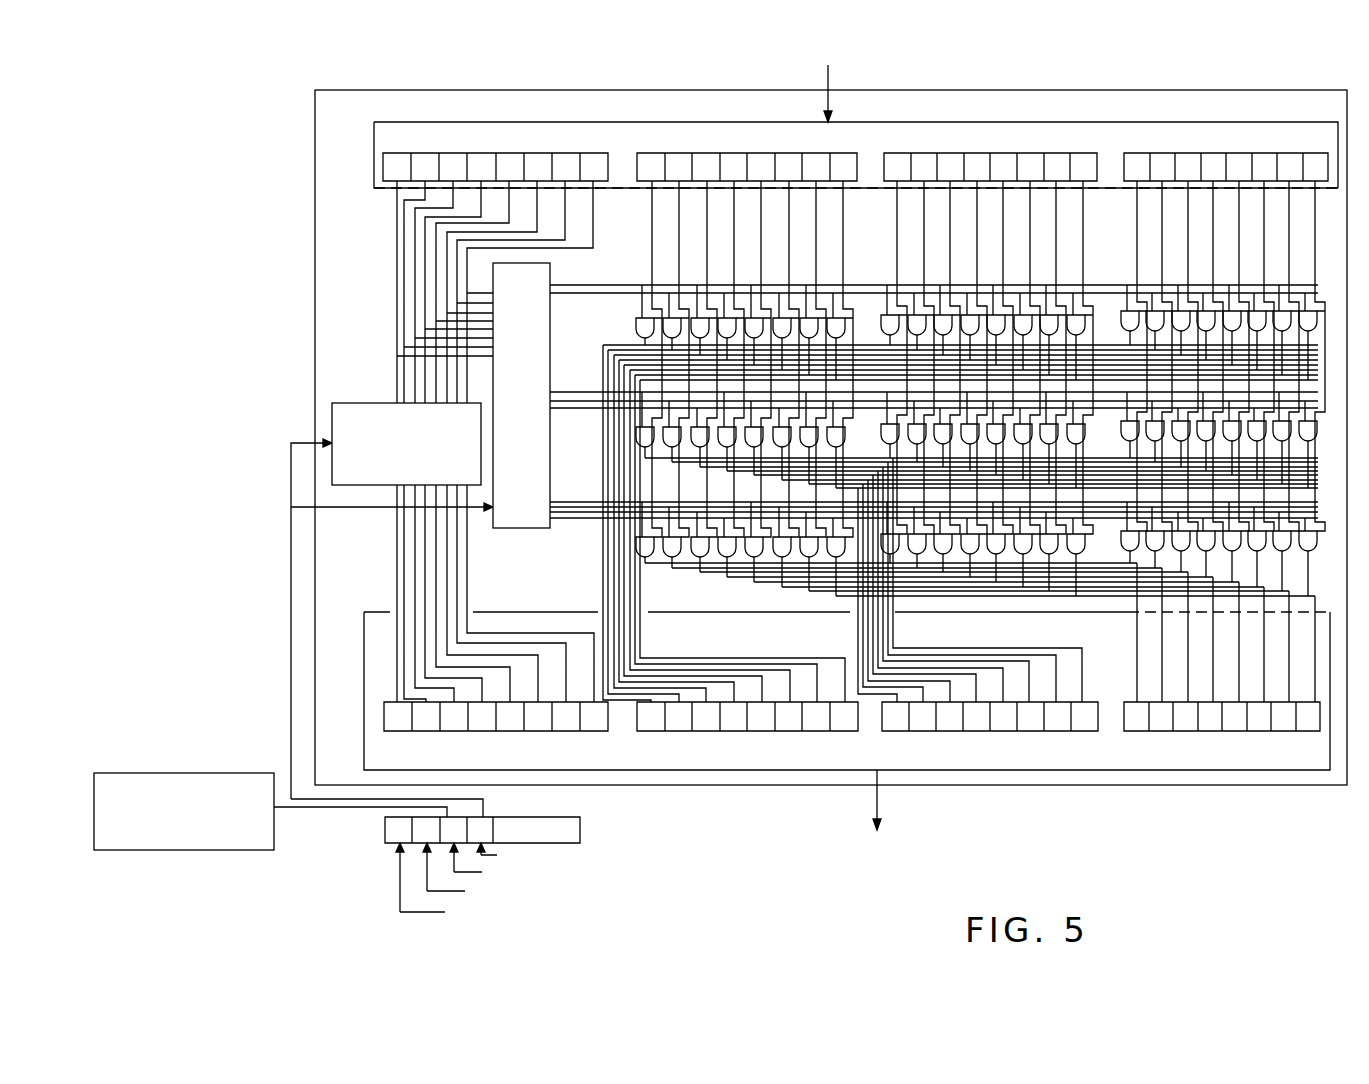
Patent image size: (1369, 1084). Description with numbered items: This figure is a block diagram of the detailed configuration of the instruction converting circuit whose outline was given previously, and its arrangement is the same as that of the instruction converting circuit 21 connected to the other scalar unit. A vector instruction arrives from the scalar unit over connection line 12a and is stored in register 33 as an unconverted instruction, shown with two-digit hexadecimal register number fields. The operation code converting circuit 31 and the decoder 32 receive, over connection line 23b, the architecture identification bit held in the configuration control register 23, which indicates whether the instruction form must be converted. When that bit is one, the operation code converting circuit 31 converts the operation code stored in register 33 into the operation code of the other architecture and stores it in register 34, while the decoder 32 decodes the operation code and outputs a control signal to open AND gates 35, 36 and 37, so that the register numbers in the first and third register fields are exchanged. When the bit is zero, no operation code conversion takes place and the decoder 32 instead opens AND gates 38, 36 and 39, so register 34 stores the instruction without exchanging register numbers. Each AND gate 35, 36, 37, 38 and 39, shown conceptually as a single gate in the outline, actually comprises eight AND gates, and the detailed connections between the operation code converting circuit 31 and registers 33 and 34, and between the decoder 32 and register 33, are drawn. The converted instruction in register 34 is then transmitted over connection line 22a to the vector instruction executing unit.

The connection line 12a is at (854, 93).
The instruction converting circuit 21 is at (190, 773).
The connection line 22a is at (900, 800).
The configuration control register 23 is at (385, 830).
The connection line 23b is at (489, 815).
The operation code converting circuit 31 is at (378, 403).
The decoder 32 is at (550, 276).
The register 33 is at (370, 152).
The register 34 is at (364, 712).
The AND gate 35 is at (646, 576).
The AND gate 36 is at (884, 438).
The AND gate 37 is at (1130, 322).
The AND gate 38 is at (636, 326).
The AND gate 39 is at (1128, 537).